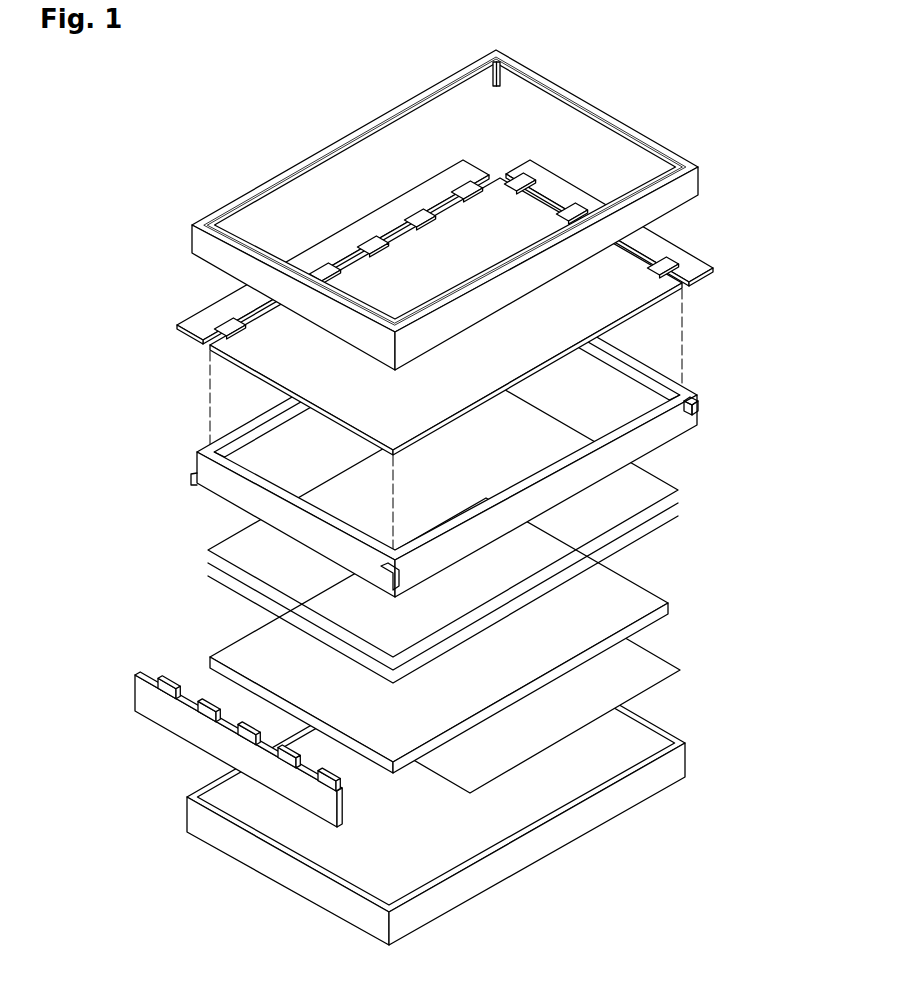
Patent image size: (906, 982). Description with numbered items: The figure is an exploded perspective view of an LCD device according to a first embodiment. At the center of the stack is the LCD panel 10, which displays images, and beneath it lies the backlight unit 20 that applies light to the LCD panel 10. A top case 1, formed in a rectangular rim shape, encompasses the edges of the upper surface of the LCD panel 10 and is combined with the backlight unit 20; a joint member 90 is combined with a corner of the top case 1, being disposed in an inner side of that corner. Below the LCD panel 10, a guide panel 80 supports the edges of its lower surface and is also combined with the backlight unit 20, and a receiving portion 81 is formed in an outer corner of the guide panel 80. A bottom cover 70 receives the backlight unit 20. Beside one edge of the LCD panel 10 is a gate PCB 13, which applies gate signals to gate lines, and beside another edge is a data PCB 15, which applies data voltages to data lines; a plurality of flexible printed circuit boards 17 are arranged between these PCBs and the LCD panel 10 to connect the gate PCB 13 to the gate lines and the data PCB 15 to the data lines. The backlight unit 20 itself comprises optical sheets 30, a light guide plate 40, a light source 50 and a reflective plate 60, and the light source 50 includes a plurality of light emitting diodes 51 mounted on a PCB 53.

The top case 1 is at (445, 205).
The LCD panel 10 is at (637, 267).
The gate PCB 13 is at (565, 190).
The data PCB 15 is at (393, 207).
The flexible printed circuit boards 17 is at (518, 183).
The backlight unit 20 is at (455, 664).
The optical sheets 30 is at (467, 533).
The light guide plate 40 is at (648, 624).
The light source 50 is at (268, 707).
The light emitting diodes 51 is at (343, 785).
The PCB 53 is at (217, 743).
The reflective plate 60 is at (660, 677).
The bottom cover 70 is at (670, 755).
The guide panel 80 is at (475, 438).
The receiving portion 81 is at (700, 404).
The joint member 90 is at (505, 78).